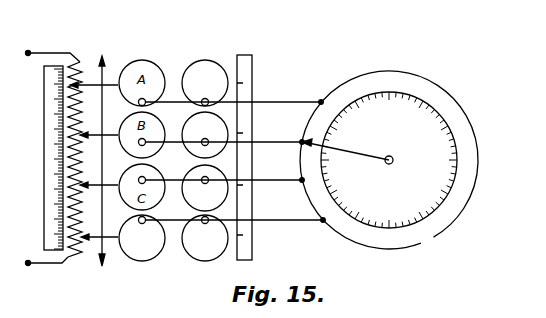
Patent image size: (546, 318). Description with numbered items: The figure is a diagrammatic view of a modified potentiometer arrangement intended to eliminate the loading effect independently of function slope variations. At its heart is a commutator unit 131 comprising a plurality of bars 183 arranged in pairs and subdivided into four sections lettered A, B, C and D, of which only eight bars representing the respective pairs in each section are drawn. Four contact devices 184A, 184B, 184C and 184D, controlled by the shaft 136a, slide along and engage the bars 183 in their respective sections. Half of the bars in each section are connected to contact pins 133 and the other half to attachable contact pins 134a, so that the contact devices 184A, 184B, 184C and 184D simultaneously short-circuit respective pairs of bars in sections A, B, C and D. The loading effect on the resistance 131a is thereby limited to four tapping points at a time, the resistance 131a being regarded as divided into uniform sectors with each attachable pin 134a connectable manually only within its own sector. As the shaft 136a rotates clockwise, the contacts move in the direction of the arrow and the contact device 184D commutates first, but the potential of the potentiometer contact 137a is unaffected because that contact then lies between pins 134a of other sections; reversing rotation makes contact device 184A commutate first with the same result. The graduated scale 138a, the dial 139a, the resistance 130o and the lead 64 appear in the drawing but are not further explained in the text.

The resistance element 130o is at (83, 63).
The resistance 131 is at (183, 48).
The resistance 131a is at (462, 109).
The pins 133 is at (84, 253).
The attachable contact pins 134a is at (320, 101).
The shaft 136a is at (389, 165).
The potentiometer contact 137a is at (346, 152).
The scale 138a is at (44, 205).
The graduated dial 139a is at (400, 110).
The bars 183 is at (140, 262).
The contact device 184A is at (169, 93).
The contact device 184B is at (170, 142).
The contact device 184C is at (173, 178).
The contact device 184D is at (176, 228).
The conductor 64 is at (8, 143).